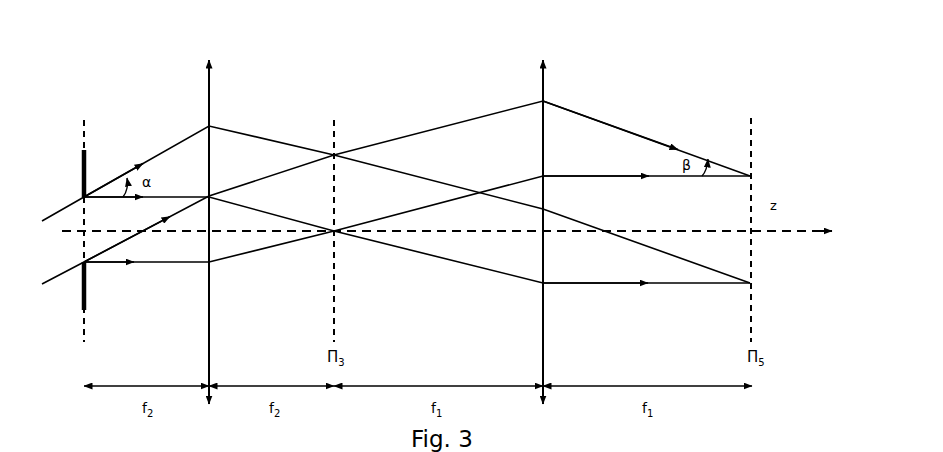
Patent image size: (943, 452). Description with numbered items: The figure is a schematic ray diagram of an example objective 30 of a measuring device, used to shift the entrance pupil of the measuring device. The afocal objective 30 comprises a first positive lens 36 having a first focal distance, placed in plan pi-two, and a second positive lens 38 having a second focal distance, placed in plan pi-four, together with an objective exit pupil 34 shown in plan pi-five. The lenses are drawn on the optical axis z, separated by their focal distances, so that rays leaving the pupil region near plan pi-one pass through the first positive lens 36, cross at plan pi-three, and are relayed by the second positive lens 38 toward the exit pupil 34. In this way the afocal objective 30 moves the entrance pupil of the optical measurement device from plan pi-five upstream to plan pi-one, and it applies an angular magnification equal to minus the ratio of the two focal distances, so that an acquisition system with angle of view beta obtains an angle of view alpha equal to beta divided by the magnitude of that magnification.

The objective 30 is at (680, 96).
The objective exit pupil 34 is at (80, 242).
The first positive lens 36 is at (209, 73).
The second positive lens 38 is at (547, 72).